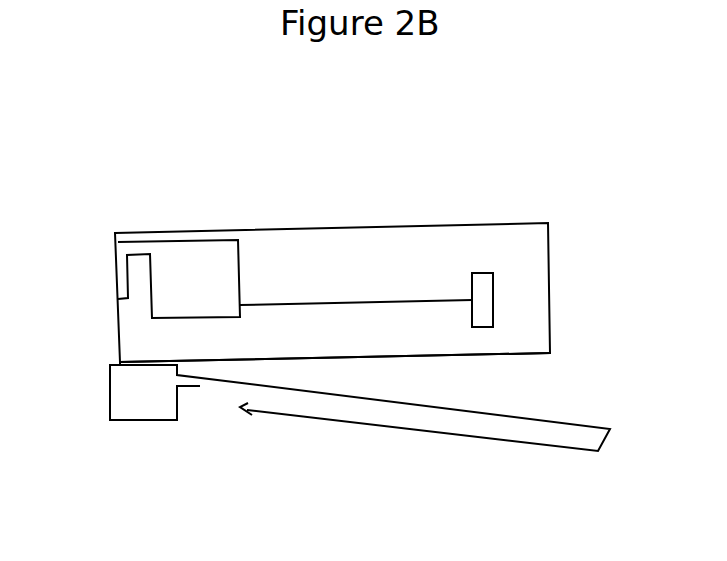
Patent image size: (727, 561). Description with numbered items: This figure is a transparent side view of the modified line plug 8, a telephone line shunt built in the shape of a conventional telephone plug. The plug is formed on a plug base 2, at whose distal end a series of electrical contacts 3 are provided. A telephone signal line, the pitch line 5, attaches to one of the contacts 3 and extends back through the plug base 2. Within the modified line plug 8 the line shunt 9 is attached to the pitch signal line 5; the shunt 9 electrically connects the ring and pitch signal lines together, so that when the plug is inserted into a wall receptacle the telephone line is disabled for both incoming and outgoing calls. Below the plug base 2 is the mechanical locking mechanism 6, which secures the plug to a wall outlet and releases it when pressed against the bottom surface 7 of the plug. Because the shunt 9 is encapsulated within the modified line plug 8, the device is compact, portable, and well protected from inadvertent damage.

The plug base 2 is at (405, 225).
The electrical contacts 3 is at (115, 277).
The pitch line 5 is at (295, 303).
The locking mechanism 6 is at (308, 403).
The bottom surface 7 is at (518, 354).
The modified line plug 8 is at (185, 157).
The line shunt 9 is at (483, 307).